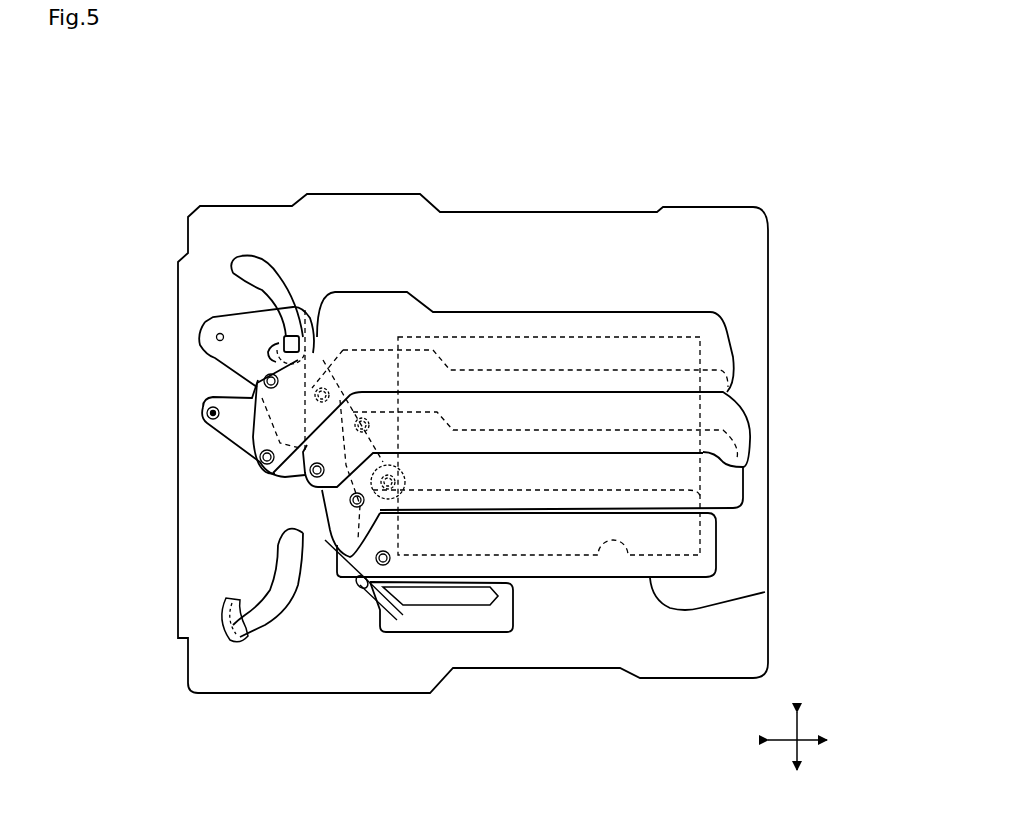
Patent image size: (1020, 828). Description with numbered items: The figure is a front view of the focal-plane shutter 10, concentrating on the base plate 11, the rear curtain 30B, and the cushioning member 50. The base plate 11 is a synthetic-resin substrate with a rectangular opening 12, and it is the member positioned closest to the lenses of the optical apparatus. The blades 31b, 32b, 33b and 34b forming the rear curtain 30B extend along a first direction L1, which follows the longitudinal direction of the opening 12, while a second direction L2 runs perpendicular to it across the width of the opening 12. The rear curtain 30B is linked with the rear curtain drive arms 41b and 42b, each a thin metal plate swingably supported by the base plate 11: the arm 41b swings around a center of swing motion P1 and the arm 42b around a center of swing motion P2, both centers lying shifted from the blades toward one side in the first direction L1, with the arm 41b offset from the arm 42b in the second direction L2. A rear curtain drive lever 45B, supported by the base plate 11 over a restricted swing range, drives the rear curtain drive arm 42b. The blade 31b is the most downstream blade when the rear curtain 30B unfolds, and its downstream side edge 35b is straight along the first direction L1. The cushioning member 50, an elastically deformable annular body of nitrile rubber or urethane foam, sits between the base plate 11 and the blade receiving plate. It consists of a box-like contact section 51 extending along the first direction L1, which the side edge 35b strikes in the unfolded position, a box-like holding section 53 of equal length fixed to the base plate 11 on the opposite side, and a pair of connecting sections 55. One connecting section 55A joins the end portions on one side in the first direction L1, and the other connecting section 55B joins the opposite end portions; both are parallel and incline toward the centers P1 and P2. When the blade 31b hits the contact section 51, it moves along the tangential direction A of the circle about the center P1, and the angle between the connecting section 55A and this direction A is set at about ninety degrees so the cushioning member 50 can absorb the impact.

The focal-plane shutter 10 is at (179, 127).
The base plate 11 is at (227, 226).
The opening 12 is at (627, 568).
The rear curtain 30B is at (577, 434).
The blade 31b is at (581, 530).
The blade 32b is at (743, 485).
The blade 33b is at (745, 400).
The blade 34b is at (725, 340).
The side edge 35b is at (705, 605).
The rear curtain drive arm 41b is at (227, 430).
The rear curtain drive arm 42b is at (233, 353).
The rear curtain drive lever 45B is at (290, 315).
The cushioning member 50 is at (441, 668).
The contact section 51 is at (465, 578).
The holding section 53 is at (410, 618).
The connecting sections 55 is at (429, 677).
The connecting section 55A is at (372, 593).
The connecting section 55B is at (503, 589).
The center of swing motion P1 is at (207, 413).
The center of swing motion P2 is at (215, 337).
The tangential direction A is at (357, 582).
The first direction L1 is at (802, 743).
The second direction L2 is at (798, 730).